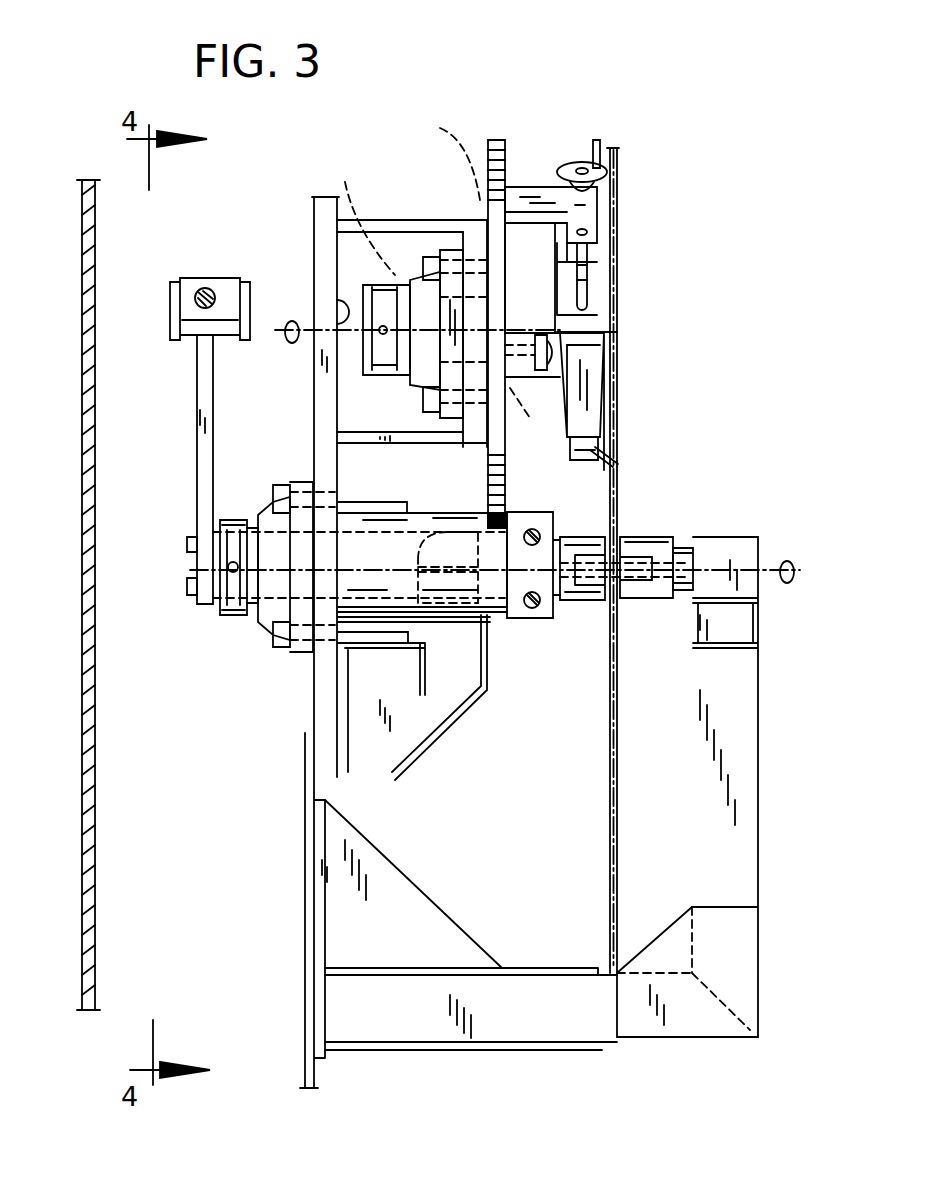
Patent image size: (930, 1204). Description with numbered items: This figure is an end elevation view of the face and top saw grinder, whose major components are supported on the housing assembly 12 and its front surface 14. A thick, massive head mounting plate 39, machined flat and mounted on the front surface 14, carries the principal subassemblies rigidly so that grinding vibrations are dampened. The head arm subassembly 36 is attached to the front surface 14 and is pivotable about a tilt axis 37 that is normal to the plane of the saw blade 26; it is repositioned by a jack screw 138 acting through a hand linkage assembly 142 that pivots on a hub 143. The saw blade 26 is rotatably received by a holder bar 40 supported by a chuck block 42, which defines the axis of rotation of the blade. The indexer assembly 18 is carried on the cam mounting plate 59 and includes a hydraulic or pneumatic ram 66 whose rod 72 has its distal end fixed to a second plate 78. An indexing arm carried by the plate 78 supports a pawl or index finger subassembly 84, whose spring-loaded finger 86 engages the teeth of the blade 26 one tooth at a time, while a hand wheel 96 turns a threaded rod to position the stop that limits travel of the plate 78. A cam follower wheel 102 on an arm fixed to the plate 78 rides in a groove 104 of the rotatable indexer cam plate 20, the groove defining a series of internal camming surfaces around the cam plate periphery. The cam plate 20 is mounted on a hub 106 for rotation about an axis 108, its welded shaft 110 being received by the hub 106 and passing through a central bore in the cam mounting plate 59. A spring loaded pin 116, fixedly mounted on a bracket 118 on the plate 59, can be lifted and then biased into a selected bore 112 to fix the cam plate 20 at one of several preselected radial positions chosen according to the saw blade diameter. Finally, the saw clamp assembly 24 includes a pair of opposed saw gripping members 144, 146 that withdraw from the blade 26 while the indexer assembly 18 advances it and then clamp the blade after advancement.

The housing assembly 12 is at (82, 365).
The front surface 14 is at (338, 250).
The indexer assembly 18 is at (552, 165).
The indexer cam plate 20 is at (498, 132).
The saw clamp assembly 24 is at (712, 528).
The saw blade 26 is at (617, 352).
The head arm subassembly 36 is at (362, 502).
The tilt axis 37 is at (519, 556).
The head mounting plate 39 is at (325, 198).
The holder bar 40 is at (640, 600).
The chuck block 42 is at (570, 610).
The cam mounting plate 59 is at (478, 222).
The ram 66 is at (612, 398).
The rod 72 is at (590, 290).
The second plate 78 is at (515, 188).
The index finger subassembly 84 is at (567, 462).
The spring-loaded finger 86 is at (600, 470).
The hand wheel 96 is at (590, 163).
The cam follower wheel 102 is at (447, 142).
The groove 104 is at (532, 278).
The hub 106 is at (412, 278).
The axis 108 is at (292, 345).
The shaft 110 is at (357, 209).
The bore 112 is at (533, 419).
The spring loaded pin 116 is at (600, 330).
The bracket 118 is at (520, 333).
The jack screw 138 is at (205, 290).
The hand linkage assembly 142 is at (197, 443).
The hub 143 is at (270, 507).
The saw gripping member 144 is at (590, 612).
The saw gripping member 146 is at (650, 537).